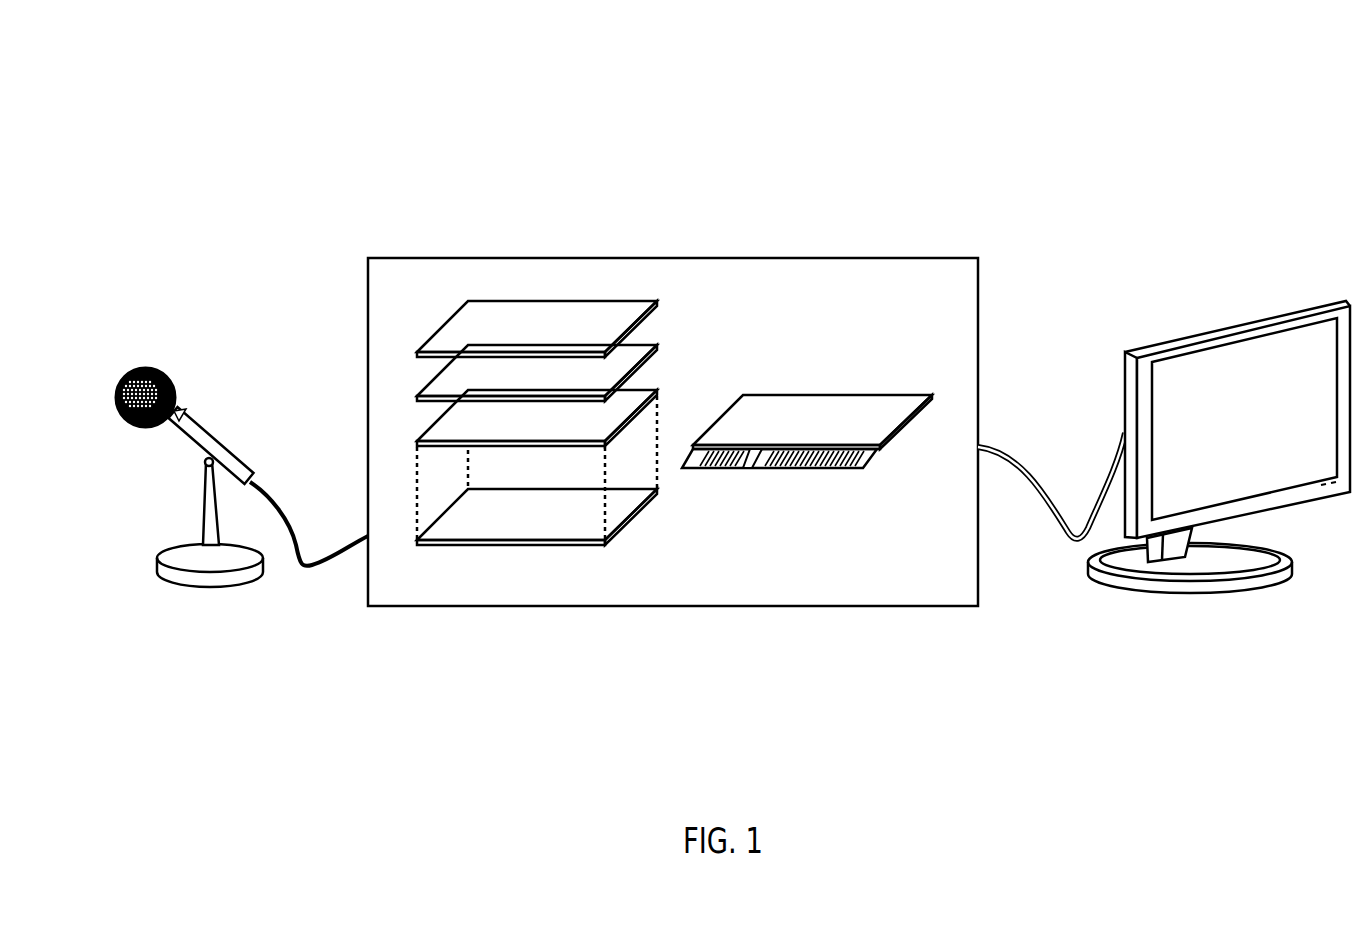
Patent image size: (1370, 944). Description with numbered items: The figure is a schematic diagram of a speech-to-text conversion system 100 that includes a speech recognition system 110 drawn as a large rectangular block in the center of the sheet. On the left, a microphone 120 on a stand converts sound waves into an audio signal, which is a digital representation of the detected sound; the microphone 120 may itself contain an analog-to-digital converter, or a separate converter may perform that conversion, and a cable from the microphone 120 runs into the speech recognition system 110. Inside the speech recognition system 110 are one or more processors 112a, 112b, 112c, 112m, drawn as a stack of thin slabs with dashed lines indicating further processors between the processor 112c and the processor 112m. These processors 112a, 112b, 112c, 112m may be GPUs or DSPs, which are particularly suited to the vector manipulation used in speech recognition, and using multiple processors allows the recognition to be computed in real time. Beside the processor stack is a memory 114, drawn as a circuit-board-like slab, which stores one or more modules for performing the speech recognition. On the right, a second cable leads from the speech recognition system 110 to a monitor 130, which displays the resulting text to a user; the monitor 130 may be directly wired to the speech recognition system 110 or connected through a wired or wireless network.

The speech-to-text conversion system 100 is at (995, 92).
The speech recognition system 110 is at (806, 258).
The processor 112a is at (515, 339).
The processor 112b is at (515, 383).
The processor 112c is at (515, 429).
The processor 112m is at (512, 532).
The memory 114 is at (828, 432).
The microphone 120 is at (155, 362).
The monitor 130 is at (1263, 432).